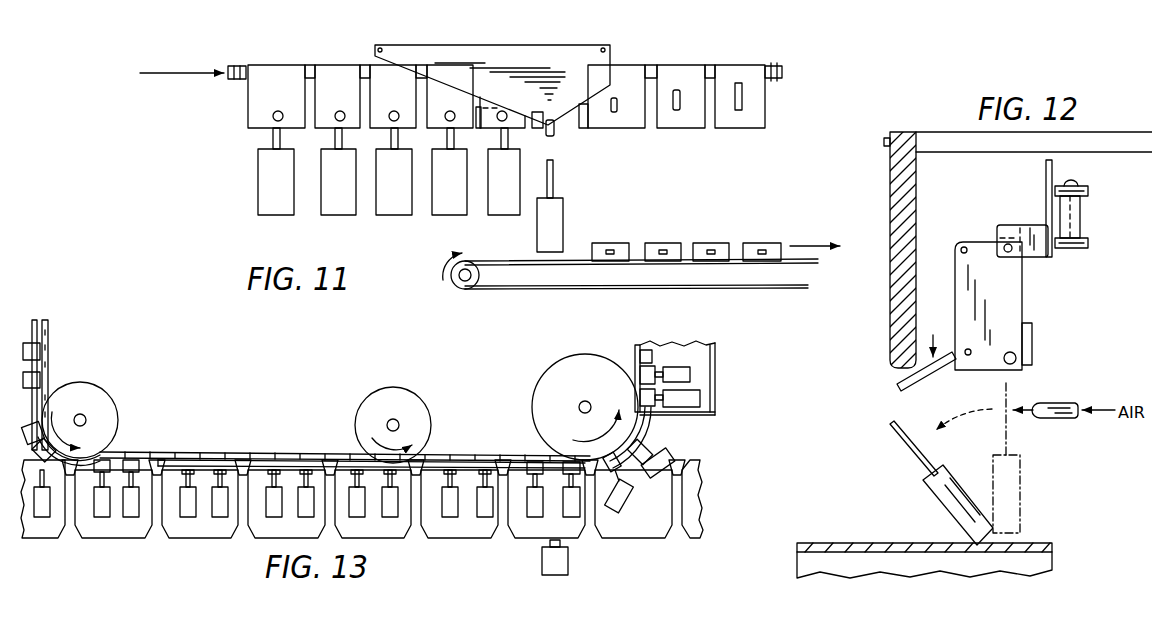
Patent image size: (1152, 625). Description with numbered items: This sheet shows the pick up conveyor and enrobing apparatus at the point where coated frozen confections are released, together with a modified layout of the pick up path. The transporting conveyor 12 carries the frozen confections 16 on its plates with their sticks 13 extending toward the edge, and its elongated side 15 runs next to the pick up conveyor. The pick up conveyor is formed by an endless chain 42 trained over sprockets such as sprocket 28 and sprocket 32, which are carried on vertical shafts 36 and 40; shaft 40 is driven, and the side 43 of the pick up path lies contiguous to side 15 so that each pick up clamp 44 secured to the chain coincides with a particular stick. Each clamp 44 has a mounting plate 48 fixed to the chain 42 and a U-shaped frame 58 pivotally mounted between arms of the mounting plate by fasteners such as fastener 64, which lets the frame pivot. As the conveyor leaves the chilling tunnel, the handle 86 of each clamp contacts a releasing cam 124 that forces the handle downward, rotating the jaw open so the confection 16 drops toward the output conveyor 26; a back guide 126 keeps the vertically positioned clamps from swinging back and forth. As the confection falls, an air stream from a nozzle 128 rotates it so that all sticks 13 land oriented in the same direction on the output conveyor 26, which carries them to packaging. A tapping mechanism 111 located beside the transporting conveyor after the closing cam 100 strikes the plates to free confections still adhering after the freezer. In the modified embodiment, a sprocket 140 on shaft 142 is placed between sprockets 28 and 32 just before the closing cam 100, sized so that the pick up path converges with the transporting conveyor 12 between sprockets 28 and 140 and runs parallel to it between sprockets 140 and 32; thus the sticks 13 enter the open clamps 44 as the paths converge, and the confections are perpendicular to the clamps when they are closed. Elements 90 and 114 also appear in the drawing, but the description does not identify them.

In FIG. 11, the transporting conveyor 12 is at (556, 25).
In FIG. 11, the sticks 13 is at (277, 140).
In FIG. 12, the sticks 13 is at (905, 442).
In FIG. 13, the elongated side of the transporting conveyor 15 is at (190, 540).
In FIG. 11, the frozen confections 16 is at (345, 196).
In FIG. 13, the frozen confections 16 is at (488, 509).
In FIG. 12, the frozen confections 16 is at (945, 506).
In FIG. 11, the output conveyor 26 is at (678, 289).
In FIG. 12, the output conveyor 26 is at (855, 548).
In FIG. 13, the sprocket 28 is at (85, 400).
In FIG. 13, the sprocket 32 is at (554, 389).
In FIG. 13, the vertical shaft 36 is at (86, 418).
In FIG. 13, the vertical shaft 40 is at (589, 402).
In FIG. 11, the endless chain 42 is at (236, 66).
In FIG. 12, the endless chain 42 is at (1086, 192).
In FIG. 13, the side of the pick up conveyor 43 is at (197, 450).
In FIG. 11, the pick up clamp 44 is at (330, 72).
In FIG. 12, the pick up clamp 44 is at (1011, 224).
In FIG. 12, the mounting plate 48 is at (1044, 180).
In FIG. 12, the U-shaped frame 58 is at (984, 257).
In FIG. 12, the fastener 64 is at (1012, 252).
In FIG. 11, the handle 86 is at (278, 111).
In FIG. 12, the handle 86 is at (897, 383).
In FIG. 13, the lower rail 90 is at (285, 462).
In FIG. 13, the closing cam 100 is at (470, 465).
In FIG. 13, the tapping mechanism 111 is at (568, 562).
In FIG. 13, the magazine 114 is at (716, 377).
In FIG. 11, the releasing cam 124 is at (508, 62).
In FIG. 12, the releasing cam 124 is at (895, 190).
In FIG. 11, the back guide 126 is at (478, 130).
In FIG. 12, the back guide 126 is at (1033, 343).
In FIG. 12, the nozzle 128 is at (1052, 412).
In FIG. 13, the sprocket 140 is at (397, 400).
In FIG. 13, the shaft 142 is at (399, 421).